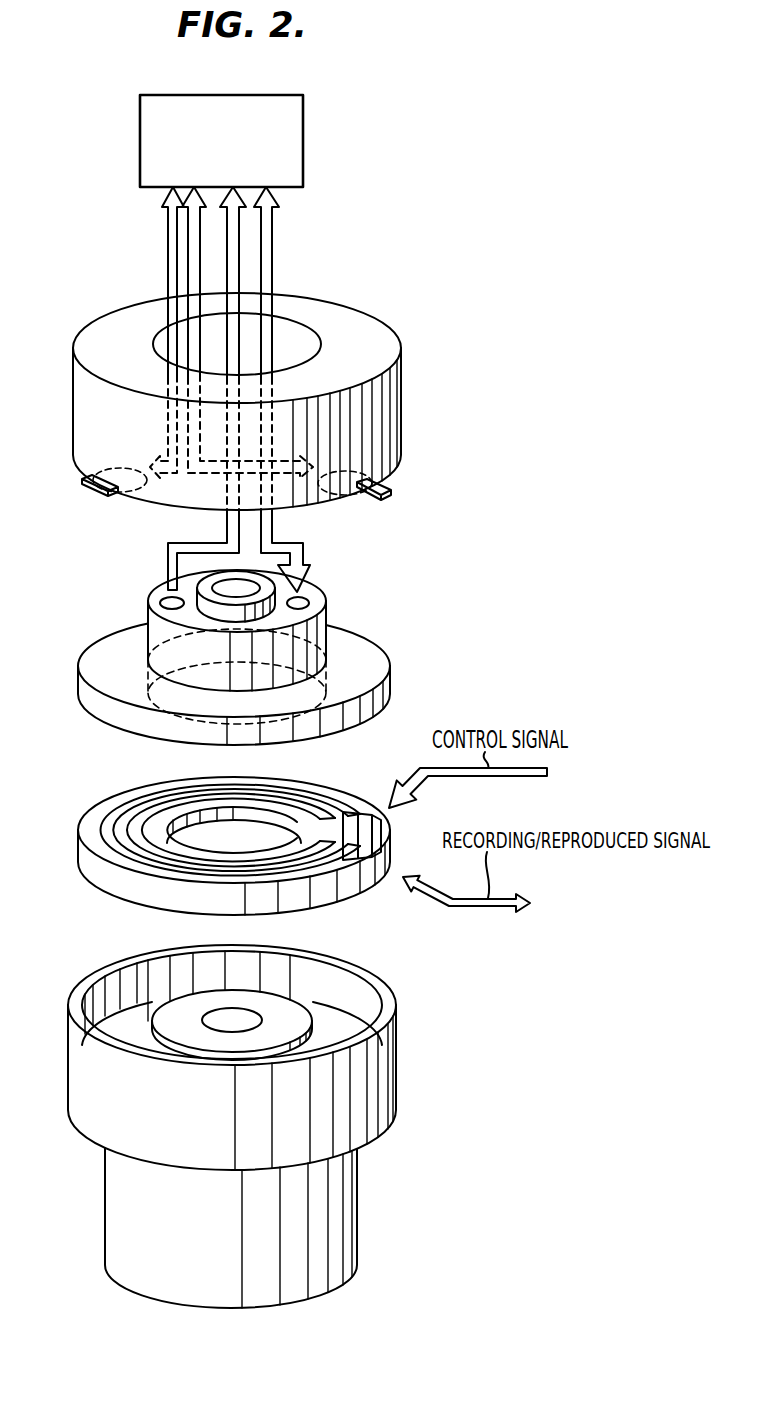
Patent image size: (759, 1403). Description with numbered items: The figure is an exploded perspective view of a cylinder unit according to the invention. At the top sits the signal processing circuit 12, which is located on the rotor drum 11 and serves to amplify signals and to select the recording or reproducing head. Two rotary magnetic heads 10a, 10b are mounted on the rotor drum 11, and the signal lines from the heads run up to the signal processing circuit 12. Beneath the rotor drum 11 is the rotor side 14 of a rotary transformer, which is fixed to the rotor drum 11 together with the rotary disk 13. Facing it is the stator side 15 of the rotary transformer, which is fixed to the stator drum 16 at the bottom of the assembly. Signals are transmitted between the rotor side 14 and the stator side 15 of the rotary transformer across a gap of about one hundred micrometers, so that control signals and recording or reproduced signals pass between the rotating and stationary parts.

The rotary magnetic head 10a is at (104, 496).
The rotary magnetic head 10b is at (391, 494).
The rotor drum 11 is at (363, 298).
The signal processing circuit 12 is at (303, 149).
The rotary disk 13 is at (327, 592).
The rotor side of rotary transformer 14 is at (390, 652).
The stator side of rotary transformer 15 is at (80, 869).
The stator drum 16 is at (397, 1082).